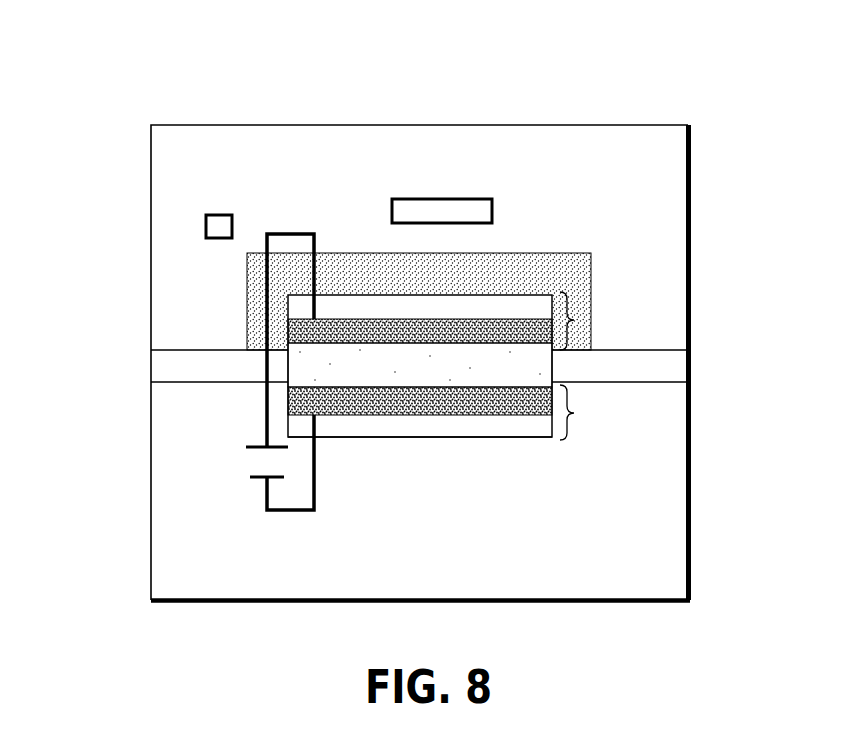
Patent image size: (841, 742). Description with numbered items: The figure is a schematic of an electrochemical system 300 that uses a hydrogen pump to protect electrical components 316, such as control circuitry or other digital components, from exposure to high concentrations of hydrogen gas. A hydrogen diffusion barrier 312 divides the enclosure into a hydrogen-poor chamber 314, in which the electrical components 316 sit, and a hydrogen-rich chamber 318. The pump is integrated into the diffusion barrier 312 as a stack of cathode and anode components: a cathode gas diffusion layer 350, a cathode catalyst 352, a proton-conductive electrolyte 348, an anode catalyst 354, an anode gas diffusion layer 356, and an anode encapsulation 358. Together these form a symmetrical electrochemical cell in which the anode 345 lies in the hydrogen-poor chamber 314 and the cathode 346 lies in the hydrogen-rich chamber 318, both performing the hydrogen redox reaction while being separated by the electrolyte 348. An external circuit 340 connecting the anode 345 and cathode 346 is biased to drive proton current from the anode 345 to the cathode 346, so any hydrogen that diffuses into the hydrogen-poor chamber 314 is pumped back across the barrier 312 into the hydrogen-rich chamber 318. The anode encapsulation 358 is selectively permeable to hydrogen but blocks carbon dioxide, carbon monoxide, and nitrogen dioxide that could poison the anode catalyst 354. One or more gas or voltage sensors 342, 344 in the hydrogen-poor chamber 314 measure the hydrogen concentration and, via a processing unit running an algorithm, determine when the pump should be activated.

The electrochemical system 300 is at (667, 103).
The hydrogen diffusion barrier 312 is at (203, 367).
The hydrogen-poor chamber 314 is at (187, 213).
The electrical components 316 is at (441, 205).
The hydrogen-rich chamber 318 is at (653, 575).
The external circuit 340 is at (252, 487).
The gas or voltage sensor 342 is at (136, 257).
The gas or voltage sensor 344 is at (212, 228).
The anode 345 is at (517, 319).
The cathode 346 is at (463, 462).
The proton-conductive electrolyte 348 is at (547, 367).
The cathode gas diffusion layer 350 is at (502, 430).
The cathode catalyst 352 is at (542, 406).
The anode catalyst 354 is at (547, 330).
The anode gas diffusion layer 356 is at (535, 296).
The anode encapsulation 358 is at (570, 253).